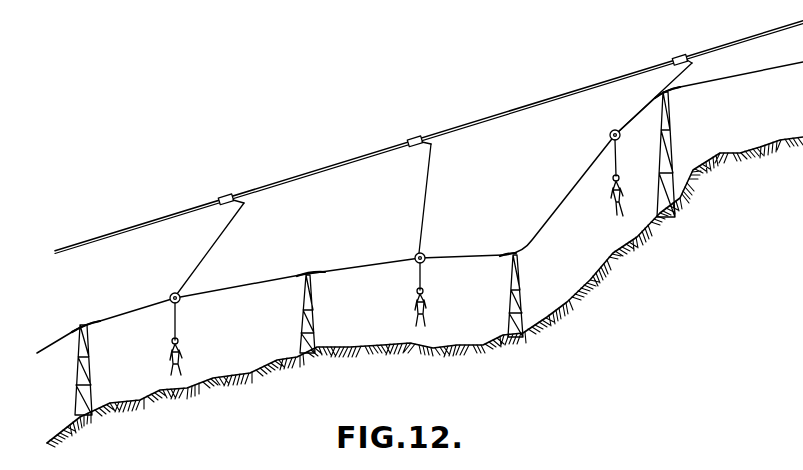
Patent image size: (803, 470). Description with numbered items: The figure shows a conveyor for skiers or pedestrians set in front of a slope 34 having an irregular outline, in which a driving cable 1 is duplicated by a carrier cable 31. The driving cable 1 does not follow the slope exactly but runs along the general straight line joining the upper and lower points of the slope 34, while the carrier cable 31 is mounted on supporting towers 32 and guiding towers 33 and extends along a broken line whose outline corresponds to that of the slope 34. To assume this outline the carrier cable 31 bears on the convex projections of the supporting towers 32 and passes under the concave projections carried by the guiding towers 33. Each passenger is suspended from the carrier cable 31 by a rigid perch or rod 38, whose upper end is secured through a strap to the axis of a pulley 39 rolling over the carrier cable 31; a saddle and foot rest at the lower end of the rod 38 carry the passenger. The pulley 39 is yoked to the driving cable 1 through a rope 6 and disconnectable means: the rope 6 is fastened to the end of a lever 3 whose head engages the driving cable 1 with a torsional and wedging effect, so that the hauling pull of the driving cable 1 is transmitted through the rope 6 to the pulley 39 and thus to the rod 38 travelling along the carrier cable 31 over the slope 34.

The driving cable 1 is at (505, 112).
The lever 3 is at (236, 204).
The rope 6 is at (206, 257).
The carrier cable 31 is at (473, 256).
The supporting towers 32 is at (91, 382).
The guiding towers 33 is at (520, 294).
The slope 34 is at (425, 292).
The rigid perch or rod 38 is at (182, 343).
The pulley 39 is at (425, 254).